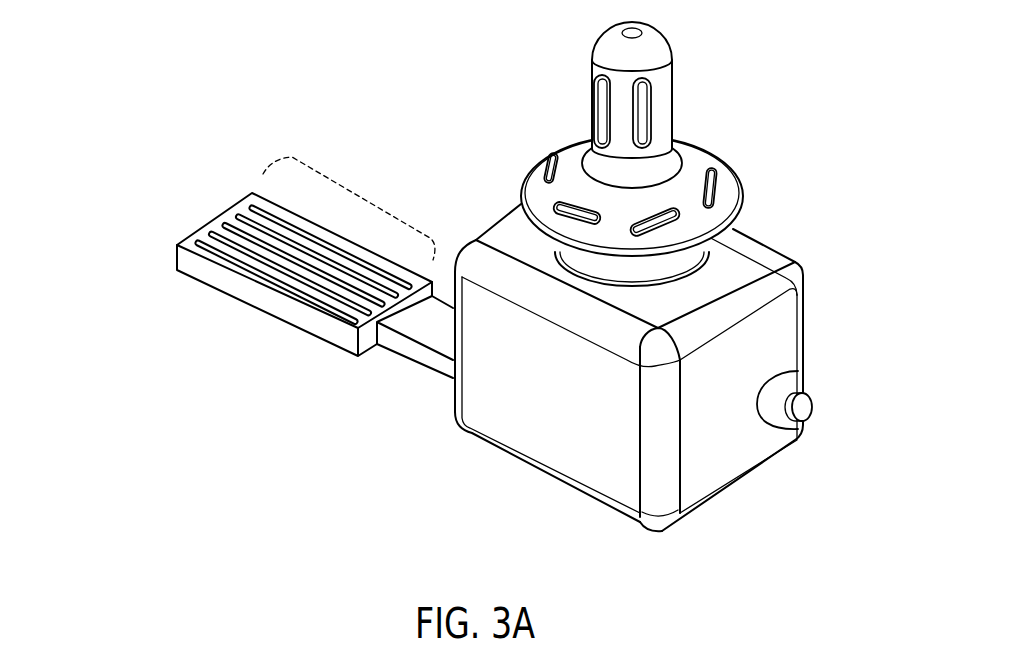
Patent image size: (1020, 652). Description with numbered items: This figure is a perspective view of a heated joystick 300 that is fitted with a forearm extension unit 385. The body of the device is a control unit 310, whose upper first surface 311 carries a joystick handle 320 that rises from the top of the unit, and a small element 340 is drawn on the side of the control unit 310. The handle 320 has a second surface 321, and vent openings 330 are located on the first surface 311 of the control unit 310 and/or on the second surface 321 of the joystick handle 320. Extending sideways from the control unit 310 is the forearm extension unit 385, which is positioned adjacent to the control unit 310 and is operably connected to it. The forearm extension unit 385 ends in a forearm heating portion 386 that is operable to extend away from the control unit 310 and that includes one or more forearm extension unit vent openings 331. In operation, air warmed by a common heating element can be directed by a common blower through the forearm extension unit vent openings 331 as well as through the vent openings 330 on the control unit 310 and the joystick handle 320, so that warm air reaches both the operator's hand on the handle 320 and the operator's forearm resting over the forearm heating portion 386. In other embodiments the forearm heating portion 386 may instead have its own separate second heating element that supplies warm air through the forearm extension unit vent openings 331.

The joystick 300 is at (198, 93).
The control unit 310 is at (557, 432).
The first surface 311 is at (740, 262).
The joystick handle 320 is at (660, 100).
The second surface 321 is at (690, 184).
The vent openings 330 is at (592, 75).
The forearm extension unit vent openings 331 is at (203, 243).
The button 340 is at (806, 408).
The forearm extension unit 385 is at (427, 358).
The forearm heating portion 386 is at (363, 196).